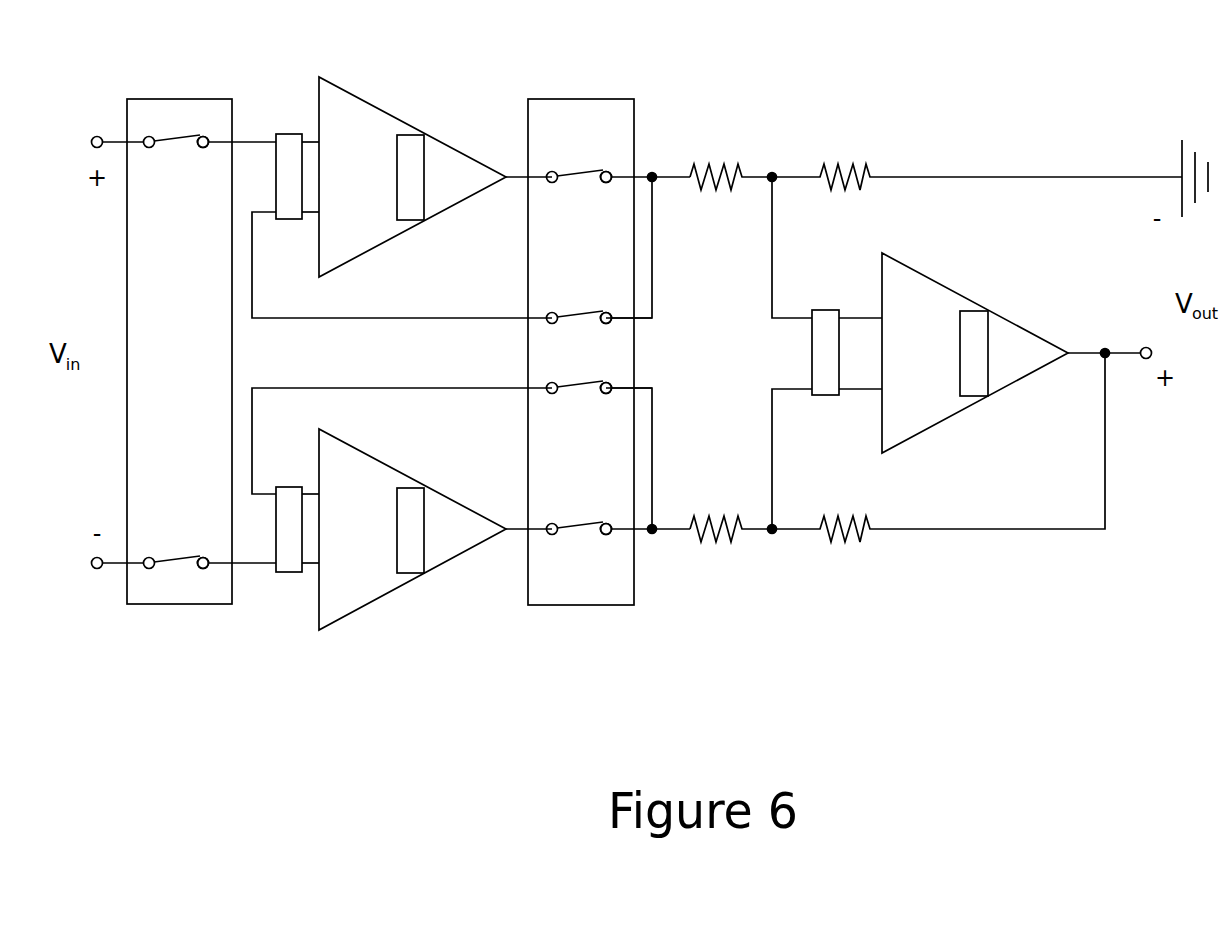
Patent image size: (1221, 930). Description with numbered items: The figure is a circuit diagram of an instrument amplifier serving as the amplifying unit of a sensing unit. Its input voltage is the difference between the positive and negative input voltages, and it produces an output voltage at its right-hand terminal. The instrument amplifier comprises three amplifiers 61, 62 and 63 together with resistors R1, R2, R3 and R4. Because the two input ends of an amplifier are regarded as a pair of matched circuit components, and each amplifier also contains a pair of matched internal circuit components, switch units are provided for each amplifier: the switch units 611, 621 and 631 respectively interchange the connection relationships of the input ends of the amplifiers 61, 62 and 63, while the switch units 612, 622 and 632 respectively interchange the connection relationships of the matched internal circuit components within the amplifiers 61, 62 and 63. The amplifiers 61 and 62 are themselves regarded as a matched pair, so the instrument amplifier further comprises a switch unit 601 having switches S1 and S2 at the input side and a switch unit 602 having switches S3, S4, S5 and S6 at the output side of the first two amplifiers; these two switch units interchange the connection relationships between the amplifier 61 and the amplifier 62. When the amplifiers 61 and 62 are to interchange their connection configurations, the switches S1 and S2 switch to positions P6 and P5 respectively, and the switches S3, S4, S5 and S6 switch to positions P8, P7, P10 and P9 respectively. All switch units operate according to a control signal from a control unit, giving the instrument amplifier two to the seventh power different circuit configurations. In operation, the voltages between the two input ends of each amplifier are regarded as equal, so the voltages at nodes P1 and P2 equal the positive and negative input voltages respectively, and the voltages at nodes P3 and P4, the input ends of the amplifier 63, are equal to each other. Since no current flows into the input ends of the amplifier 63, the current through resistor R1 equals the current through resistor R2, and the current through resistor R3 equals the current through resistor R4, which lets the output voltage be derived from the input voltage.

The switch unit 601 is at (180, 604).
The switch unit 602 is at (575, 605).
The amplifier 61 is at (365, 98).
The switch unit 611 is at (282, 133).
The switch unit 612 is at (424, 162).
The amplifier 62 is at (362, 607).
The switch unit 621 is at (290, 573).
The switch unit 622 is at (424, 545).
The amplifier 63 is at (940, 284).
The switch unit 631 is at (822, 310).
The switch unit 632 is at (988, 332).
The switch S1 is at (210, 130).
The switch S2 is at (210, 548).
The switch S3 is at (619, 160).
The switch S4 is at (619, 511).
The switch S5 is at (600, 299).
The switch S6 is at (600, 370).
The resistor R1 is at (731, 158).
The resistor R2 is at (977, 158).
The resistor R3 is at (731, 512).
The resistor R4 is at (938, 447).
The node P1 is at (652, 172).
The node P2 is at (652, 534).
The node P3 is at (772, 172).
The node P4 is at (772, 534).
The switch position P5 is at (203, 148).
The switch position P6 is at (203, 557).
The switch position P7 is at (606, 183).
The switch position P8 is at (606, 535).
The switch position P9 is at (608, 312).
The switch position P10 is at (606, 394).